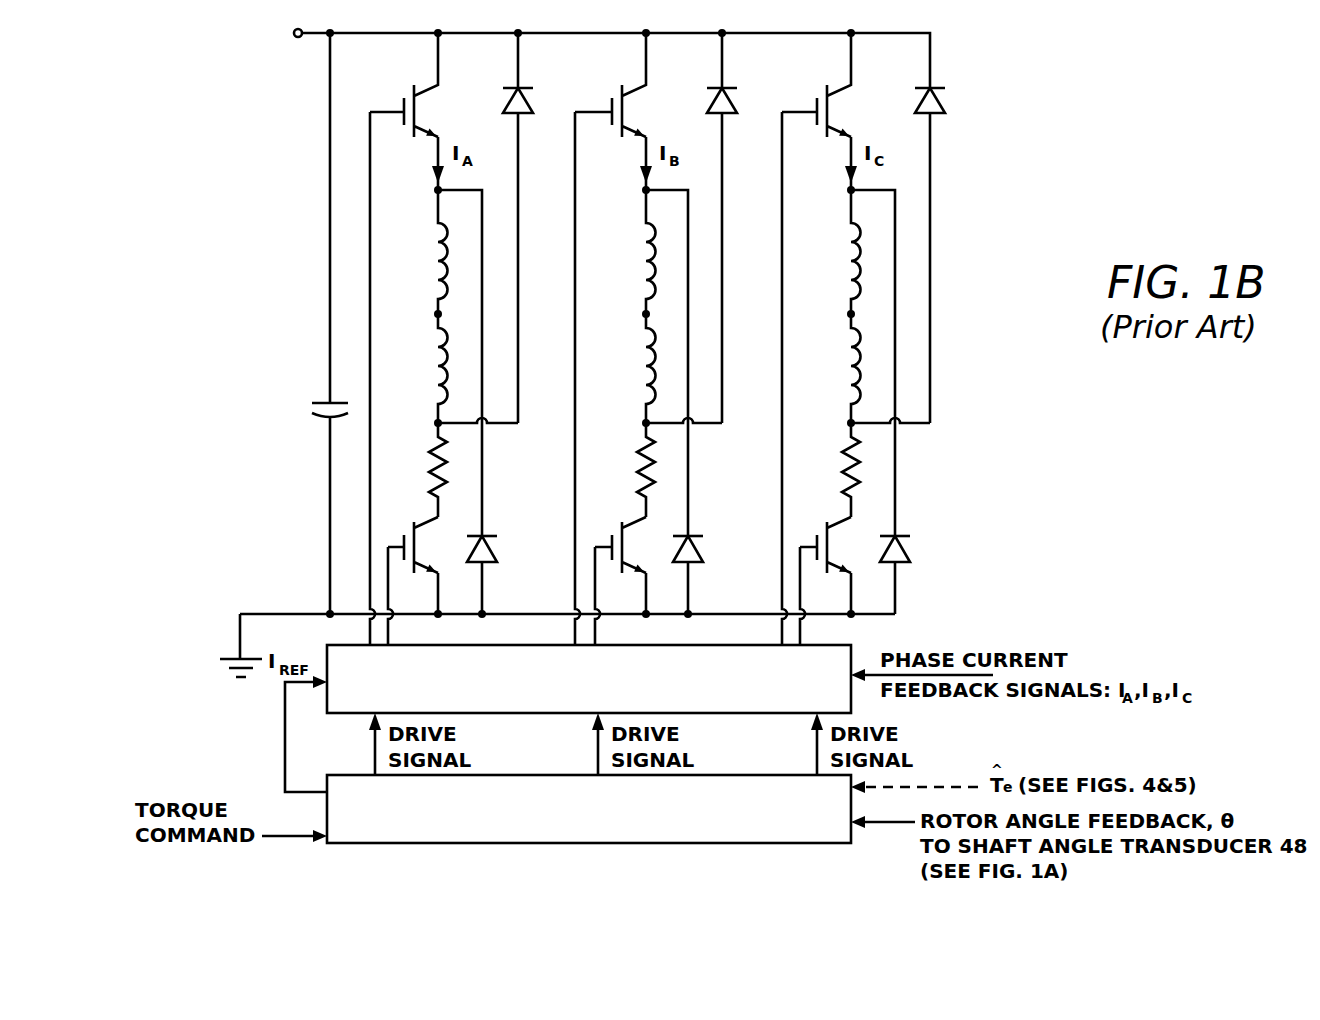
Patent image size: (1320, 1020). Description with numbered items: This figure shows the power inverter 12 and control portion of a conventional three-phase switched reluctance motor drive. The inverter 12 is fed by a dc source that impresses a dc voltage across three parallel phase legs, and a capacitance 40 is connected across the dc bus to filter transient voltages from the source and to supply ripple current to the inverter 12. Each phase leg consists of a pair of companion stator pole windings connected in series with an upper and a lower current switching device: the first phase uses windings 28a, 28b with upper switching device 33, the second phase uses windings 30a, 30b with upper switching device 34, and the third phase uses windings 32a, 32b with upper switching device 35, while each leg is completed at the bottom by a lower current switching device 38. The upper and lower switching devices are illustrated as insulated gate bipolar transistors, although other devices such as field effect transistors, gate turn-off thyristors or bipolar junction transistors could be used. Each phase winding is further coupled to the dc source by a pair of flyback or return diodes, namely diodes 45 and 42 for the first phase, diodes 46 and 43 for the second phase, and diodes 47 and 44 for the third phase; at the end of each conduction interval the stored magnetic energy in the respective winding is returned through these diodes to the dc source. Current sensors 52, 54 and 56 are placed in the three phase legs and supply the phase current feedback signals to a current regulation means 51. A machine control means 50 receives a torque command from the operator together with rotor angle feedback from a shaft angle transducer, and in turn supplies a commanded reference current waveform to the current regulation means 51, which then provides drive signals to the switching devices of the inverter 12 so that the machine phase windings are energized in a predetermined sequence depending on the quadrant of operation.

The power inverter 12 is at (1030, 140).
The upper current switching device 33 is at (433, 83).
The upper current switching device 34 is at (641, 83).
The upper current switching device 35 is at (846, 83).
The flyback diode 42 is at (528, 108).
The flyback diode 43 is at (732, 108).
The flyback diode 44 is at (940, 108).
The stator pole winding 28a is at (438, 268).
The stator pole winding 28b is at (438, 369).
The stator pole winding 30a is at (646, 268).
The stator pole winding 30b is at (646, 369).
The stator pole winding 32a is at (851, 268).
The stator pole winding 32b is at (851, 369).
The current sensor 52 is at (436, 470).
The current sensor 54 is at (644, 470).
The current sensor 56 is at (849, 470).
The lower current switching device 38 is at (433, 518).
The flyback diode 45 is at (492, 560).
The flyback diode 46 is at (698, 560).
The flyback diode 47 is at (905, 560).
The capacitance 40 is at (318, 400).
The current regulation means 51 is at (838, 645).
The machine control means 50 is at (820, 843).